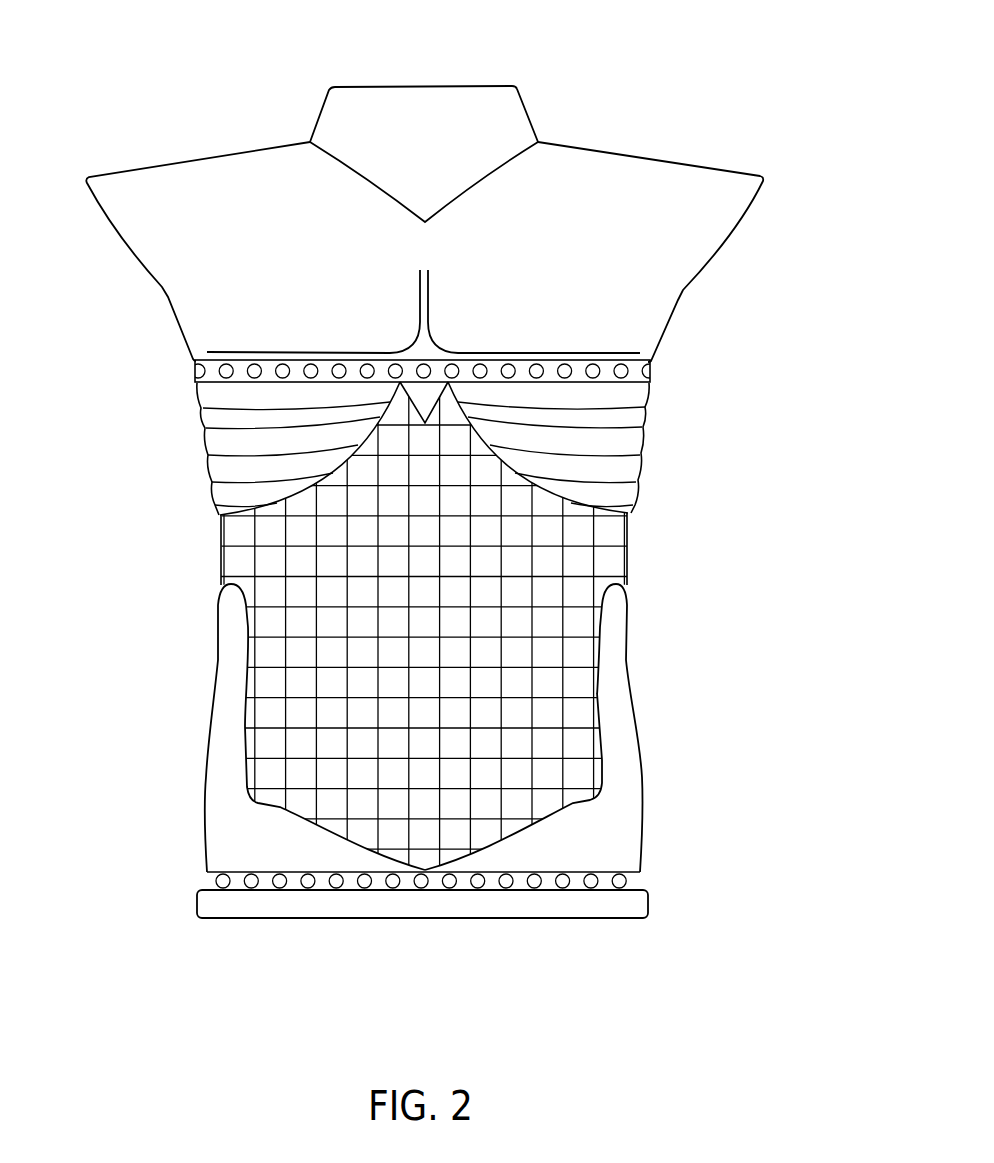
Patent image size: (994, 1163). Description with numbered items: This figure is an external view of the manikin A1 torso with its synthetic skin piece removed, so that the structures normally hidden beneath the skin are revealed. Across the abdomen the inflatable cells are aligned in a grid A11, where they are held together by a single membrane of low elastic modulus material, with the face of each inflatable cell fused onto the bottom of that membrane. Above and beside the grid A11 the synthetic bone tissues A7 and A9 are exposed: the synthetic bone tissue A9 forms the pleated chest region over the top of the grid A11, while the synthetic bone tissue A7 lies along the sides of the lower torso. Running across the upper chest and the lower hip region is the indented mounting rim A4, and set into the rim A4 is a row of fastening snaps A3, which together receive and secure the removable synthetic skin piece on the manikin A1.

The manikin A1 is at (582, 222).
The fastening snaps A3 is at (367, 885).
The indented mounting rim A4 is at (635, 365).
The synthetic bone tissue A7 is at (623, 838).
The synthetic bone tissue A9 is at (627, 440).
The grid A11 is at (513, 562).